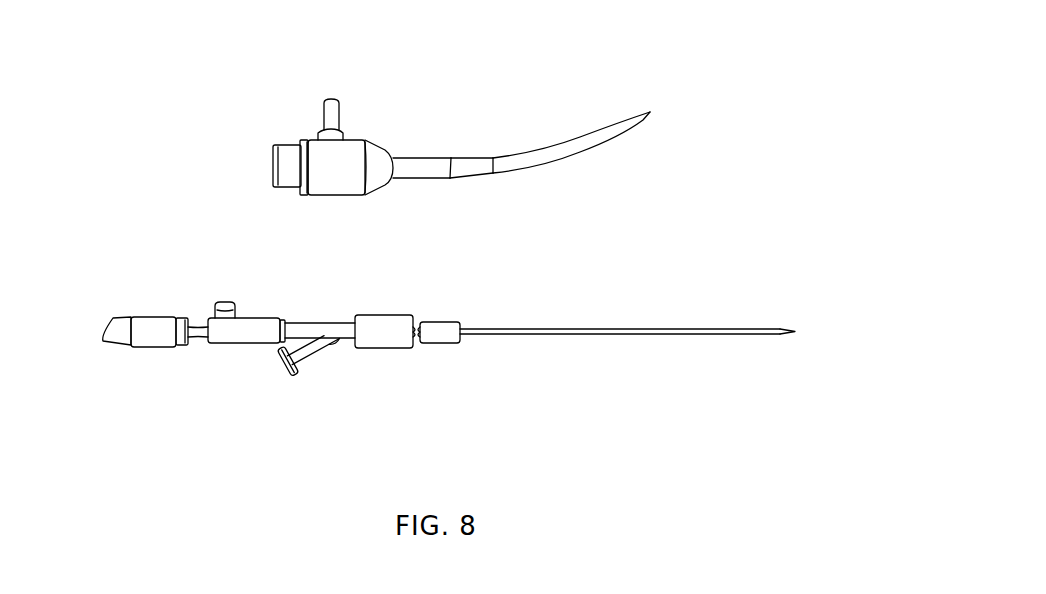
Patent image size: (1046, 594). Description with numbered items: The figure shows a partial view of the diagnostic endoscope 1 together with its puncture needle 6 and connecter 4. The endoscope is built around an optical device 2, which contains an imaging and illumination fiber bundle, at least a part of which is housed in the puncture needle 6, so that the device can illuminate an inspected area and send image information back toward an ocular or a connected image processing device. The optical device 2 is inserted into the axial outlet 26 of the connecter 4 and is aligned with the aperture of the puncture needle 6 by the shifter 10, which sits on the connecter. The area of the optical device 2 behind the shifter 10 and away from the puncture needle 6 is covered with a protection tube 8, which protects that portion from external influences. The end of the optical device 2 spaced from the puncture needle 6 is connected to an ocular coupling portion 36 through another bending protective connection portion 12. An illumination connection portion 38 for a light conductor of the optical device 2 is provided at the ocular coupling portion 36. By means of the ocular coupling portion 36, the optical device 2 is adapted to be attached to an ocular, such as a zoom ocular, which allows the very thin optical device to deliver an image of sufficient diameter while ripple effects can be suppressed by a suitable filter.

The diagnostic endoscope 1 is at (575, 387).
The optical device 2 is at (227, 367).
The connecter 4 is at (330, 347).
The puncture needle 6 is at (635, 334).
The protection tube 8 is at (538, 153).
The shifter 10 is at (249, 317).
The bending protective connection portion 12 is at (458, 157).
The axial outlet 26 is at (308, 327).
The ocular coupling portion 36 is at (282, 140).
The illumination connection portion 38 is at (345, 107).